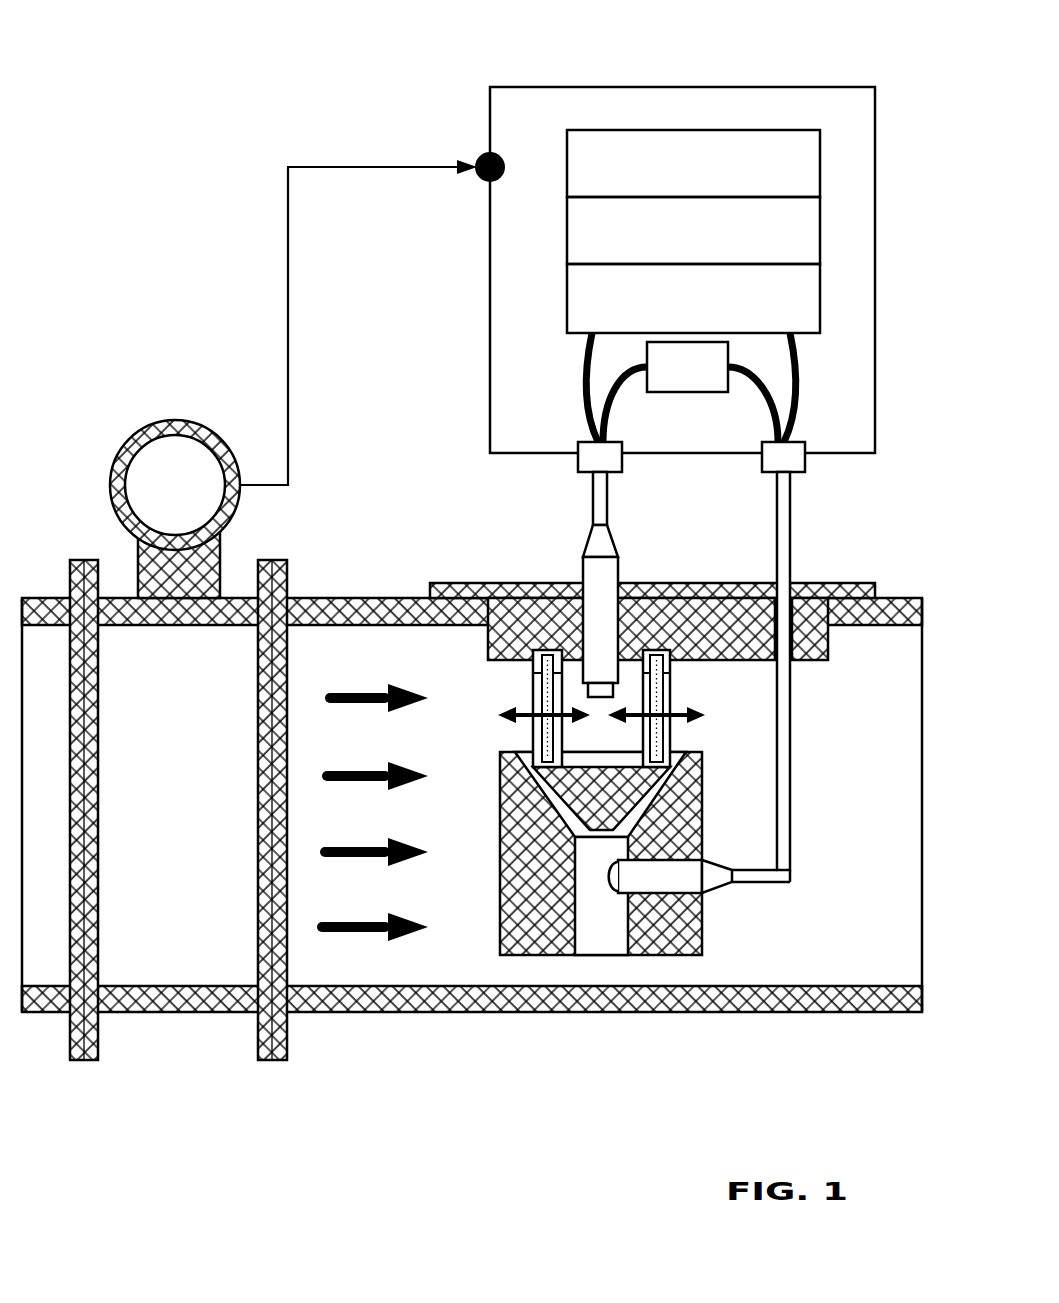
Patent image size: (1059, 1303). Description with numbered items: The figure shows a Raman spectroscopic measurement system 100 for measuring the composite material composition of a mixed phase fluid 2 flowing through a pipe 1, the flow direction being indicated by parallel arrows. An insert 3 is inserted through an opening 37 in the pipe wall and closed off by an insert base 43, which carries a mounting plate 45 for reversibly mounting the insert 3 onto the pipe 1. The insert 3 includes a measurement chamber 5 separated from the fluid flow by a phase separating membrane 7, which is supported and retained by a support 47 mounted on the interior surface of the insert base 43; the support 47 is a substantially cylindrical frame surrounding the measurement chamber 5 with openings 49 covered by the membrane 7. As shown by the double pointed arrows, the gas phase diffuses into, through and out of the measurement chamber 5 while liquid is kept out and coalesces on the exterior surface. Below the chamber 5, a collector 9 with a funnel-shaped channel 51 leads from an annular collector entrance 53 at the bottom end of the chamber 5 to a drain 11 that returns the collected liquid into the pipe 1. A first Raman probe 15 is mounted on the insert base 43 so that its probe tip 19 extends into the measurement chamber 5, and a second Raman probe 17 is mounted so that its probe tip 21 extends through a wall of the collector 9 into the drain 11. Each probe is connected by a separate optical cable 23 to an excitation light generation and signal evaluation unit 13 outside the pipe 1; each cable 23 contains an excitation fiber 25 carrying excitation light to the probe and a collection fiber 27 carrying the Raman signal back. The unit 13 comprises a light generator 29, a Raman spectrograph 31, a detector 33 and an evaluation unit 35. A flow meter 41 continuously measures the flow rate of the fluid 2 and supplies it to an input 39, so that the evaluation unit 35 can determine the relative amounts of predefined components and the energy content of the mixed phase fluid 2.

The Raman spectroscopic measurement system 100 is at (158, 178).
The pipe 1 is at (643, 1002).
The mixed phase fluid 2 is at (166, 815).
The insert 3 is at (483, 688).
The measurement chamber 5 is at (595, 740).
The phase separating membrane 7 is at (545, 707).
The collector 9 is at (687, 793).
The drain 11 is at (578, 891).
The excitation light generation and signal evaluation unit 13 is at (490, 333).
The first Raman probe 15 is at (600, 607).
The second Raman probe 17 is at (677, 882).
The probe tip 19 is at (605, 687).
The probe tip 21 is at (613, 888).
The optical cable 23 is at (598, 510).
The excitation fiber 25 is at (691, 449).
The collection fiber 27 is at (583, 390).
The light generator 29 is at (687, 367).
The Raman spectrograph 31 is at (693, 298).
The detector 33 is at (693, 230).
The evaluation unit 35 is at (693, 163).
The opening 37 is at (828, 623).
The input 39 is at (477, 157).
The flow meter 41 is at (100, 524).
The insert base 43 is at (521, 633).
The mounting plate 45 is at (848, 594).
The support 47 is at (662, 657).
The opening 49 is at (670, 705).
The channel 51 is at (550, 802).
The collector entrance 53 is at (523, 760).